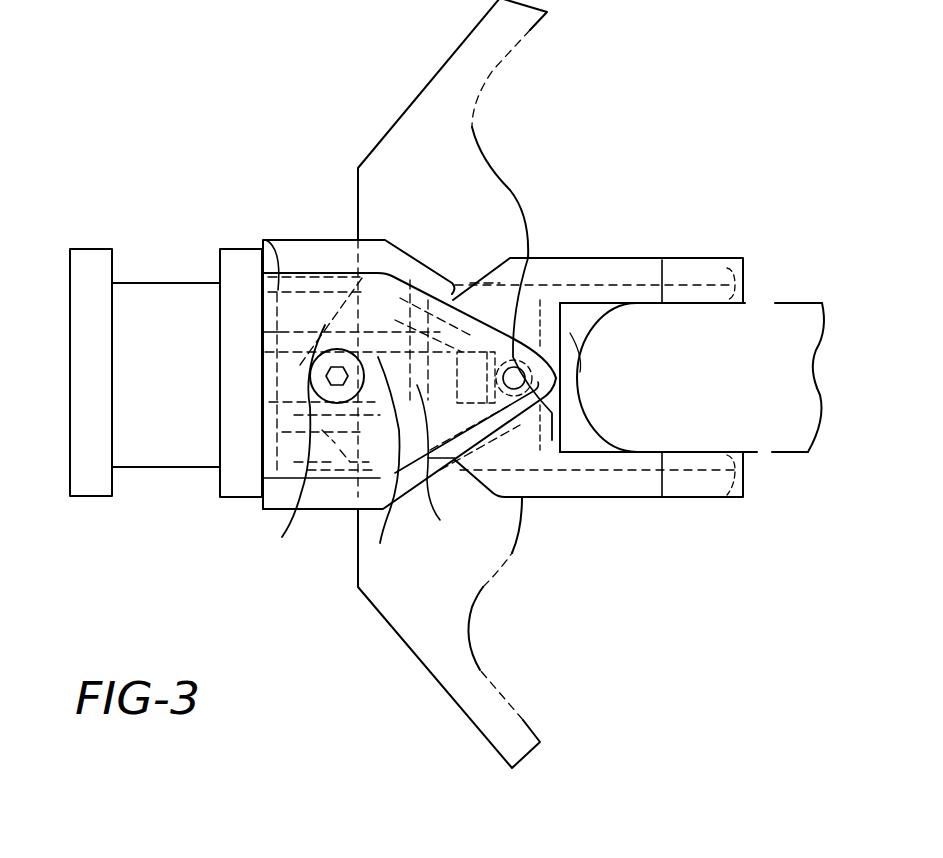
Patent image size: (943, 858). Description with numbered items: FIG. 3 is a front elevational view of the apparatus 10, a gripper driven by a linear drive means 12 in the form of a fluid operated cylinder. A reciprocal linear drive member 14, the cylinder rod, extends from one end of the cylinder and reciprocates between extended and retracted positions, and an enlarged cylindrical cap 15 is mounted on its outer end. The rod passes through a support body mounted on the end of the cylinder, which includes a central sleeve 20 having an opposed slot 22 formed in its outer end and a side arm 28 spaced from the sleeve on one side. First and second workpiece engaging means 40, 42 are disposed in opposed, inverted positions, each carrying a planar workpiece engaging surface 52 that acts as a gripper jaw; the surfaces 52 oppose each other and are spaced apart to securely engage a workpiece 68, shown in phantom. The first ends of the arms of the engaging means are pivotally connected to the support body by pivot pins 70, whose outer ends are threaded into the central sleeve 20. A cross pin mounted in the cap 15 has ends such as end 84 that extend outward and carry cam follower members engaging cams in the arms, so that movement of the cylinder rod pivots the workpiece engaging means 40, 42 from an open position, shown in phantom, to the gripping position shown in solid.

The apparatus 10 is at (140, 204).
The linear drive means 12 is at (143, 269).
The linear drive member 14 is at (420, 470).
The cylindrical cap 15 is at (541, 258).
The central sleeve 20 is at (303, 238).
The slot 22 is at (383, 496).
The side arm 28 is at (268, 238).
The first workpiece engaging means 40 is at (393, 157).
The second workpiece engaging means 42 is at (372, 580).
The workpiece engaging surface 52 is at (730, 298).
The workpiece 68 is at (760, 345).
The pivot pin 70 is at (310, 470).
The second end of cross pin 84 is at (555, 380).